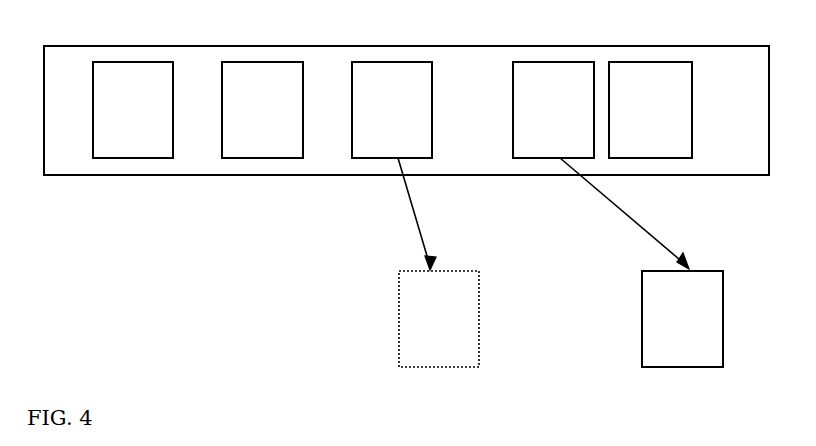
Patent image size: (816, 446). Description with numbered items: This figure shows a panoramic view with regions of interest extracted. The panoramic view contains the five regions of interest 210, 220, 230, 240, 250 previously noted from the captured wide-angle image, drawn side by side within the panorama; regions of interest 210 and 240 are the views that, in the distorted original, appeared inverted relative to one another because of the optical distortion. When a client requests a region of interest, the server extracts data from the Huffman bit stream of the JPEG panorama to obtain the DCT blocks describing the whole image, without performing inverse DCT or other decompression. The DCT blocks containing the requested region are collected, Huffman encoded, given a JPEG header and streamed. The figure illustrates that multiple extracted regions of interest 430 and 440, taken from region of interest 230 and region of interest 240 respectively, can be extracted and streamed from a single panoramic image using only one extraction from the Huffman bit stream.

The region of interest 210 is at (138, 127).
The region of interest 220 is at (272, 127).
The region of interest 230 is at (412, 127).
The region of interest 240 is at (570, 127).
The region of interest 250 is at (673, 128).
The extracted region of interest 430 is at (452, 332).
The extracted region of interest 440 is at (700, 333).